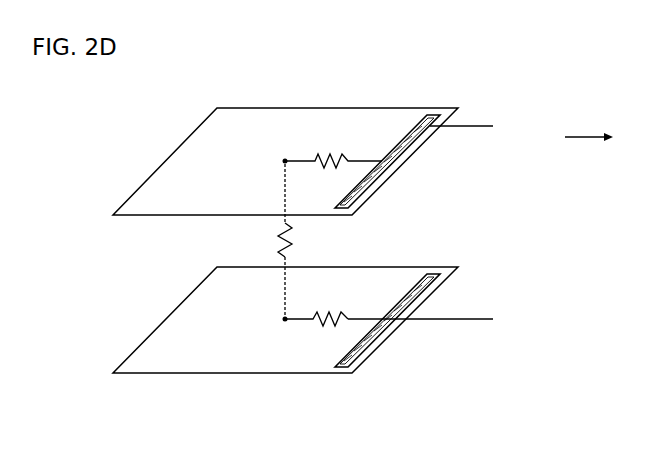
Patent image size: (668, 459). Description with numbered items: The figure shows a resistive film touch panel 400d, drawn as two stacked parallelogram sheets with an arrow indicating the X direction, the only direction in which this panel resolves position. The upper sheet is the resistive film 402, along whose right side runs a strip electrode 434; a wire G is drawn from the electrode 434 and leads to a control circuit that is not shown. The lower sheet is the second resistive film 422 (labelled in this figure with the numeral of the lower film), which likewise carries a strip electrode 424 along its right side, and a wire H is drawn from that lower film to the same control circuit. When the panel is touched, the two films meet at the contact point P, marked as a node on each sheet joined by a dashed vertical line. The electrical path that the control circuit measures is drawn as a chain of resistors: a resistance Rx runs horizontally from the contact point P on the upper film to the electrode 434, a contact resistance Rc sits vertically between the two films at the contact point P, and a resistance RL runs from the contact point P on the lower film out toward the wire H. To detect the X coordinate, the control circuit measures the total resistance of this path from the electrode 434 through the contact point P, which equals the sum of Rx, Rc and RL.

The touch panel 400d is at (553, 109).
The resistive film 402 is at (190, 155).
The second conductive layer 422 is at (190, 314).
The electrode 434 is at (386, 178).
The second electrode 424 is at (386, 337).
The contact point P is at (285, 155).
The resistance R_X Rx is at (342, 141).
The resistance R_C Rc is at (275, 239).
The resistance R_L RL is at (322, 331).
The wire G is at (483, 126).
The wire H is at (483, 319).
The X direction X is at (599, 138).